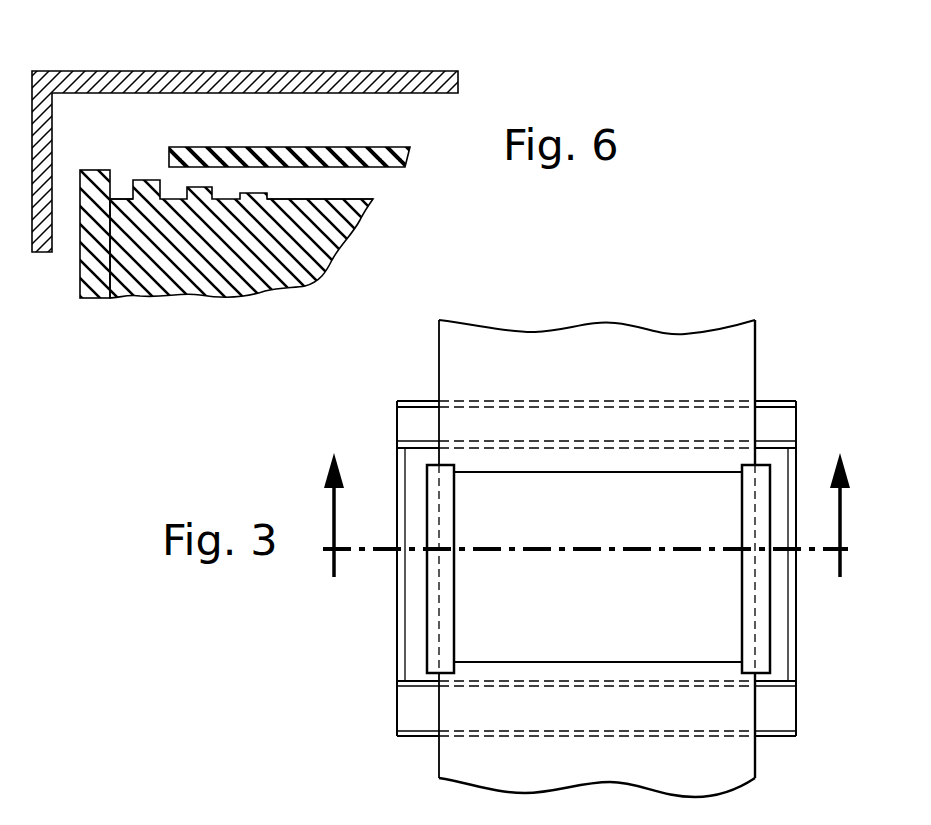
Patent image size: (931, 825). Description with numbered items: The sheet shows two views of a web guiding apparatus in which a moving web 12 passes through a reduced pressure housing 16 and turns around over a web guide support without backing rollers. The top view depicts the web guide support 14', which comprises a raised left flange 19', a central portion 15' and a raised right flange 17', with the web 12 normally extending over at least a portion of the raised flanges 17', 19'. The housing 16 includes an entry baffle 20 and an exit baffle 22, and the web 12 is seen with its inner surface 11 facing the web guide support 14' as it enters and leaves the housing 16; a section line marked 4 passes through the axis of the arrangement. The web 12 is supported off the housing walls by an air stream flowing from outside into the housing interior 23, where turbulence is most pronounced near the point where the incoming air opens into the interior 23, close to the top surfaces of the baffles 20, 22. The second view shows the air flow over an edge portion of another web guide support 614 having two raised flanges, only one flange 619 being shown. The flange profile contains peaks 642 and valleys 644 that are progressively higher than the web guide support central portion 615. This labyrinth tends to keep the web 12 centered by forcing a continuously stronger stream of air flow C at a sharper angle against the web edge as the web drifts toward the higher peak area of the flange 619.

In FIG. 6, the reduced pressure housing 16 is at (263, 70).
In FIG. 3, the reduced pressure housing 16 is at (797, 472).
In FIG. 6, the moving web 12 is at (342, 147).
In FIG. 3, the moving web 12 is at (692, 332).
In FIG. 6, the housing interior 23 is at (267, 131).
In FIG. 6, the peaks 642 is at (95, 170).
In FIG. 6, the valleys 644 is at (115, 203).
In FIG. 6, the web guide support 614 is at (298, 298).
In FIG. 6, the web guide support central portion 615 is at (322, 204).
In FIG. 6, the raised flange 619 is at (182, 257).
In FIG. 6, the air flow stream C is at (277, 182).
In FIG. 3, the inner surface 11 is at (628, 384).
In FIG. 3, the exit baffle 22 is at (772, 422).
In FIG. 3, the entry baffle 20 is at (782, 713).
In FIG. 3, the raised left flange 19' is at (380, 571).
In FIG. 3, the raised right flange 17' is at (805, 569).
In FIG. 3, the web guide support 14' is at (553, 637).
In FIG. 3, the central portion 15' is at (598, 567).
In FIG. 3, the section line 4- 4 is at (586, 529).